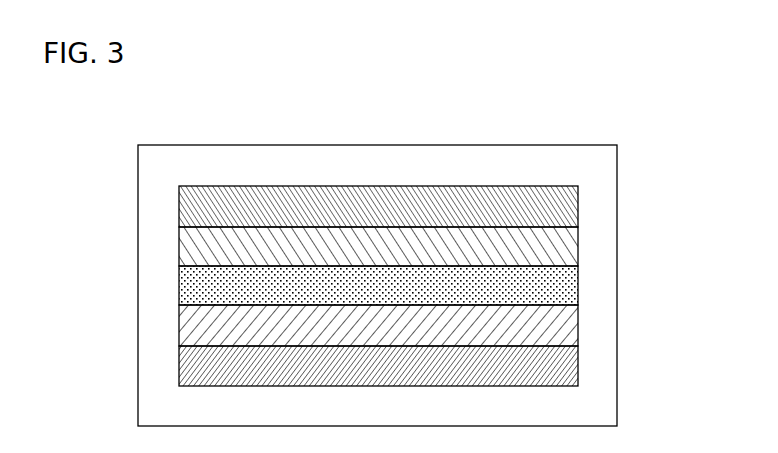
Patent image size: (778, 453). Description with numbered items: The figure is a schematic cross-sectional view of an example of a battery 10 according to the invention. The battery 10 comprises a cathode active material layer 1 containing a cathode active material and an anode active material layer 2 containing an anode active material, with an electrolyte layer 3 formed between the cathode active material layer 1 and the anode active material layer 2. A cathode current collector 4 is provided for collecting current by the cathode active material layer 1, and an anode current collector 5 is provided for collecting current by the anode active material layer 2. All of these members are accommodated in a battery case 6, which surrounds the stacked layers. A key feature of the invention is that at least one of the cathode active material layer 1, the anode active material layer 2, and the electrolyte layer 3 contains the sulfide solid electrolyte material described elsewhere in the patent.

The battery 10 is at (407, 247).
The battery case 6 is at (598, 158).
The cathode current collector 4 is at (578, 196).
The cathode active material layer 1 is at (578, 237).
The electrolyte layer 3 is at (578, 275).
The anode active material layer 2 is at (578, 315).
The anode current collector 5 is at (578, 355).